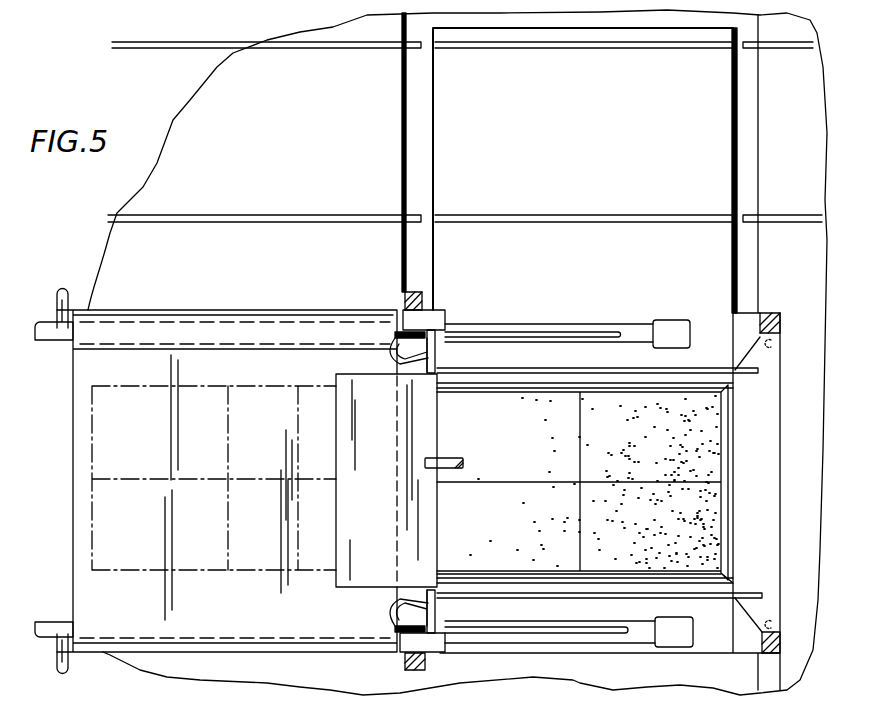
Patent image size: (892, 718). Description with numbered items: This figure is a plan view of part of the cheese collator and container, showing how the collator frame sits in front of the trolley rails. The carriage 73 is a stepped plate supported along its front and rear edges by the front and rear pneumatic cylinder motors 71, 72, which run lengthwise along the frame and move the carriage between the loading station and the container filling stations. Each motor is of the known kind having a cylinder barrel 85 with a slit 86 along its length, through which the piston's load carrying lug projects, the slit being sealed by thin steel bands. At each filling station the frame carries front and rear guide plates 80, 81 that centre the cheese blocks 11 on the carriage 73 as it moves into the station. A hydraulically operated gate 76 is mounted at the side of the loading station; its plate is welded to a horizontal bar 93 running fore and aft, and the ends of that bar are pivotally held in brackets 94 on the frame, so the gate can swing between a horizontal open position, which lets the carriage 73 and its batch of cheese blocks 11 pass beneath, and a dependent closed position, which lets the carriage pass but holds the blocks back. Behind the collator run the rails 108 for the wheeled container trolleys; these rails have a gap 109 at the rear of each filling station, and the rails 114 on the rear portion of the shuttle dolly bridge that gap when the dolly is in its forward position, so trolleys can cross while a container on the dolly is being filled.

The cheese blocks 11 is at (690, 507).
The front pneumatic cylinder motor 71 is at (640, 633).
The rear pneumatic cylinder motor 72 is at (638, 322).
The carriage 73 is at (72, 520).
The gate 76 is at (368, 557).
The front guide plate 80 is at (748, 590).
The rear guide plate 81 is at (745, 375).
The cylinder barrel 85 is at (519, 323).
The slit 86 is at (573, 332).
The horizontal bar 93 is at (432, 612).
The bracket 94 is at (418, 642).
The rails 108 is at (781, 215).
The gap 109 is at (418, 102).
The rails 114 is at (611, 220).